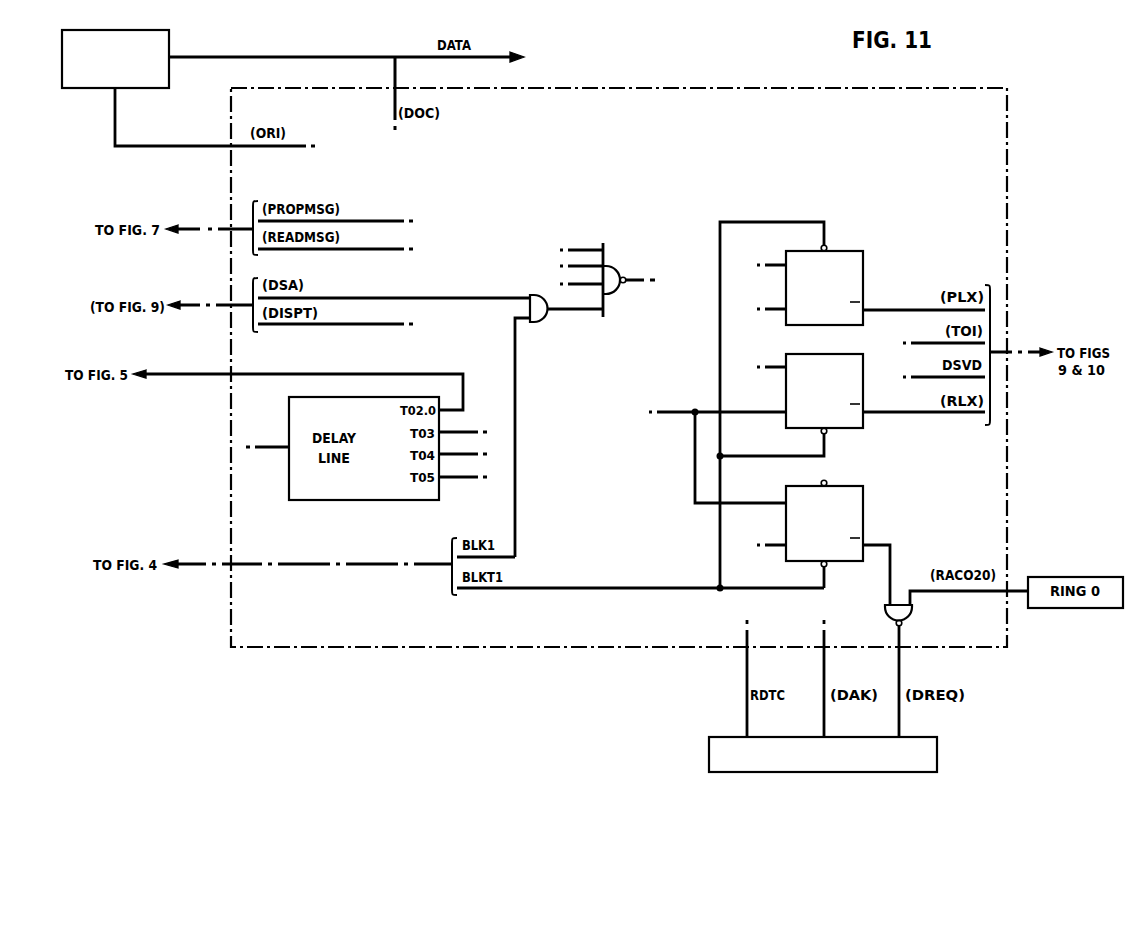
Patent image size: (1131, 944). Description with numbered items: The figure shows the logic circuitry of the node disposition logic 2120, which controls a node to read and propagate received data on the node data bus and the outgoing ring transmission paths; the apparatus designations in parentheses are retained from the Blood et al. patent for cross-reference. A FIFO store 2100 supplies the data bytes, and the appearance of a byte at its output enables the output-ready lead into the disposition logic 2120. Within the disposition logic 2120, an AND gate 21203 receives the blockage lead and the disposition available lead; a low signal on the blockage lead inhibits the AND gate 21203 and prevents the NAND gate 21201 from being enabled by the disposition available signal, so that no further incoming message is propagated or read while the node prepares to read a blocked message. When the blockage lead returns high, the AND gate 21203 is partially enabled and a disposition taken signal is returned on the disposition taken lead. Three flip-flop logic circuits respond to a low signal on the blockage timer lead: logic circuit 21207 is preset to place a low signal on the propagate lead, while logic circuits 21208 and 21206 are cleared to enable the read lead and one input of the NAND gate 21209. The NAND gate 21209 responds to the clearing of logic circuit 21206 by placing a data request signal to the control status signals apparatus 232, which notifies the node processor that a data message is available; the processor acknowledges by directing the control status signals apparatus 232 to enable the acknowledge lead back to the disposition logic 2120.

The FIFO store 2100 is at (84, 76).
The disposition logic 2120 is at (666, 106).
The NAND gate 21201 is at (611, 280).
The AND gate 21203 is at (559, 426).
The logic circuit 21206 is at (855, 521).
The logic circuit 21207 is at (863, 254).
The logic circuit 21208 is at (863, 422).
The NAND gate 21209 is at (956, 664).
The control status signals apparatus 232 is at (711, 754).